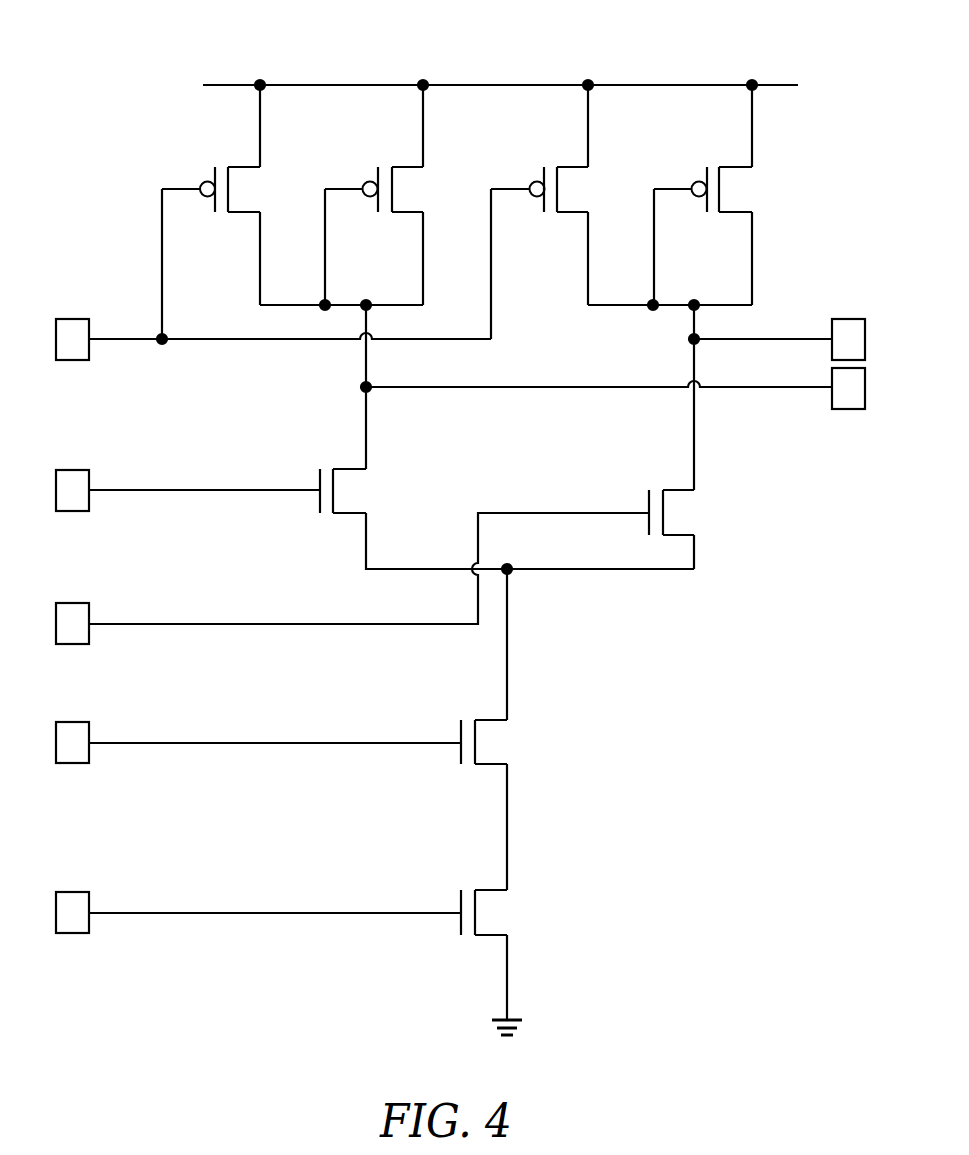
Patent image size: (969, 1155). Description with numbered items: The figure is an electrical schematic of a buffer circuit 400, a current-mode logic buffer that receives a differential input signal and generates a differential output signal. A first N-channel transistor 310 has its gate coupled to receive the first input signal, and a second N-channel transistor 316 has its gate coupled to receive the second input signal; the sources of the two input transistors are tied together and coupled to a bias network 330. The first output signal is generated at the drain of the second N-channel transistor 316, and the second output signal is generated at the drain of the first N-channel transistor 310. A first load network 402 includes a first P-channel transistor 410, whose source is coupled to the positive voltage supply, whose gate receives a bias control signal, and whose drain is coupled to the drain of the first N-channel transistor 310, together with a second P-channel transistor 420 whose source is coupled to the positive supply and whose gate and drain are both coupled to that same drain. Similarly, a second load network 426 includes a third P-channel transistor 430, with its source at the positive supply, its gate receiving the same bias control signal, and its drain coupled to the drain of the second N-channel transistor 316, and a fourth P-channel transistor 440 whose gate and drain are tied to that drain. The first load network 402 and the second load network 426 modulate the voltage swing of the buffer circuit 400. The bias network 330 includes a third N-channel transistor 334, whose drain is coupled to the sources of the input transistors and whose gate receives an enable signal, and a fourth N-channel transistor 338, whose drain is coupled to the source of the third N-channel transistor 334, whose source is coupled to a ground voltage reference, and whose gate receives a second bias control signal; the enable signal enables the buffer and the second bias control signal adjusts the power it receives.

The buffer circuit 400 is at (469, 523).
The first load network 402 is at (253, 214).
The first P-channel transistor 410 is at (229, 188).
The second P-channel transistor 420 is at (393, 188).
The second load network 426 is at (686, 212).
The third P-channel transistor 430 is at (558, 188).
The fourth P-channel transistor 440 is at (720, 188).
The first N-channel transistor 310 is at (336, 490).
The second N-channel transistor 316 is at (665, 512).
The bias network 330 is at (553, 877).
The third N-channel transistor 334 is at (478, 742).
The fourth N-channel transistor 338 is at (478, 912).